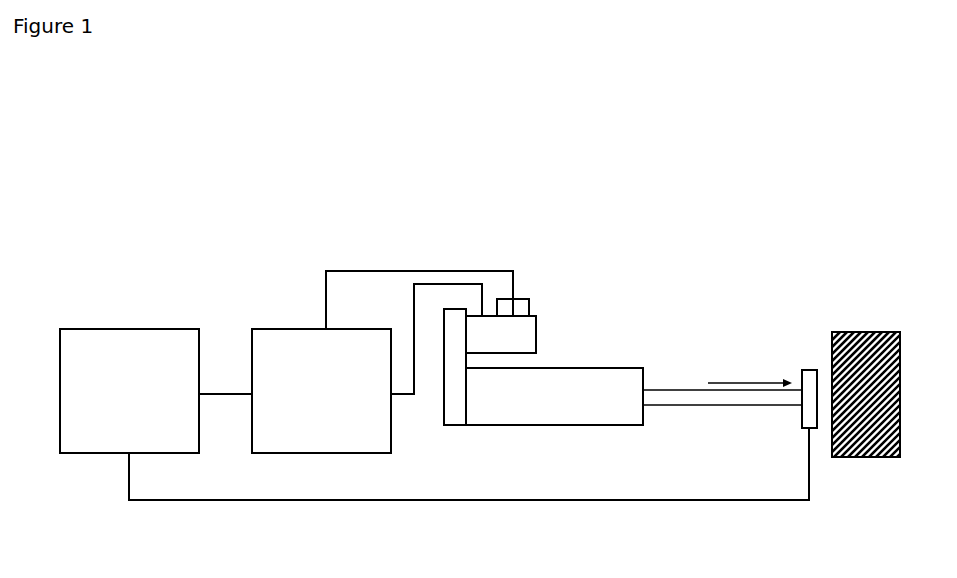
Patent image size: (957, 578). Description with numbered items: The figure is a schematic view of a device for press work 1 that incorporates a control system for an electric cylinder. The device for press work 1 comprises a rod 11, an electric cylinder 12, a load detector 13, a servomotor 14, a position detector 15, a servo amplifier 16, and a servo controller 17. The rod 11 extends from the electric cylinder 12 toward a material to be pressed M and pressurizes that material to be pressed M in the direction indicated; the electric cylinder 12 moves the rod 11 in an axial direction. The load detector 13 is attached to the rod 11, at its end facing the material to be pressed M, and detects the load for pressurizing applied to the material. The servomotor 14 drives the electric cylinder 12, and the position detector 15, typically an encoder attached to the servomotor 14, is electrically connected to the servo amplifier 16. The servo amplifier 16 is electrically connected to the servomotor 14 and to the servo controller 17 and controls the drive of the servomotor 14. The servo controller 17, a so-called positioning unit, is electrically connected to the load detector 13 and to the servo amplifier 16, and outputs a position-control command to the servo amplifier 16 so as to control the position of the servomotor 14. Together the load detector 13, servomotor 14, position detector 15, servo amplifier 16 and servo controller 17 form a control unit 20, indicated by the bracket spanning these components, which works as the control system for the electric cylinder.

The device for press work 1 is at (118, 243).
The rod 11 is at (683, 393).
The electric cylinder 12 is at (537, 397).
The load detector 13 is at (808, 370).
The servomotor 14 is at (477, 330).
The position detector 15 is at (513, 307).
The servo amplifier 16 is at (311, 350).
The servo controller 17 is at (152, 343).
The control unit 20 is at (170, 213).
The material to be pressed M is at (864, 417).